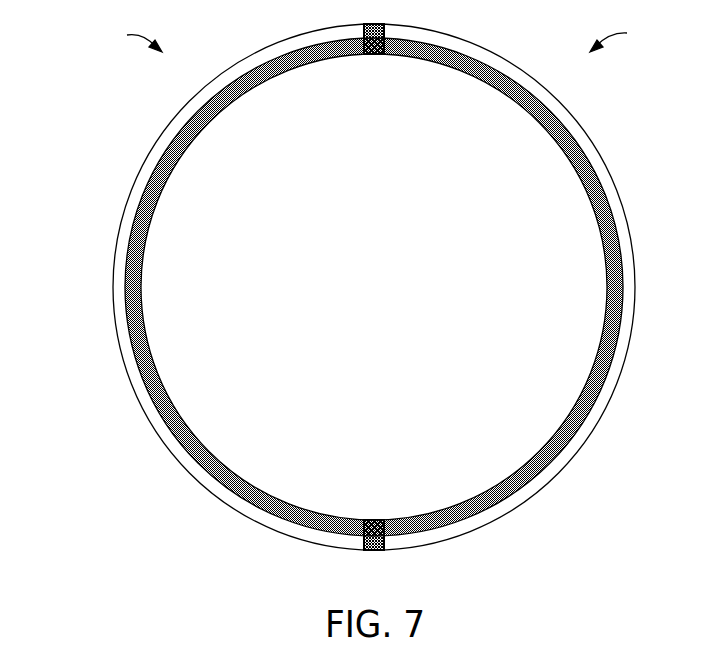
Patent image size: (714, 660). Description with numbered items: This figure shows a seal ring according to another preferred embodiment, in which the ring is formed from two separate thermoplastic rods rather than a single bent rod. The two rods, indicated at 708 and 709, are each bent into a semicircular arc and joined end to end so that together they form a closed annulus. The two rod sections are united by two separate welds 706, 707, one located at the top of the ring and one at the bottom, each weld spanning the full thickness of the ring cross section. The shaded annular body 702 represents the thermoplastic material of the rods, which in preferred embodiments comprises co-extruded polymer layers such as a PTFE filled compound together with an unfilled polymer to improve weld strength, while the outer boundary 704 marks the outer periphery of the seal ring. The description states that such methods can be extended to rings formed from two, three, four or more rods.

The annular ring member 702 is at (590, 385).
The outer ring 704 is at (118, 283).
The weld 706 is at (373, 56).
The weld 707 is at (373, 518).
The first direction 708 is at (122, 37).
The second direction 709 is at (630, 37).